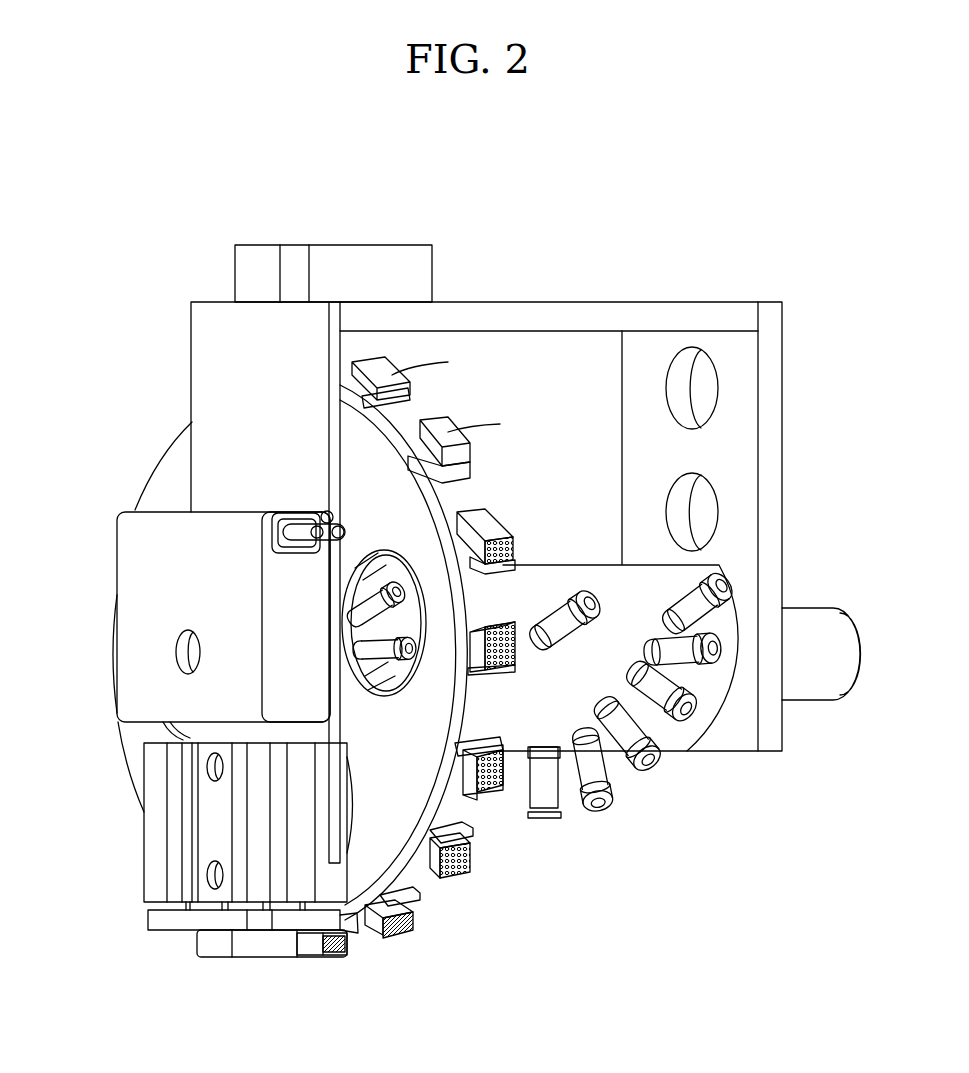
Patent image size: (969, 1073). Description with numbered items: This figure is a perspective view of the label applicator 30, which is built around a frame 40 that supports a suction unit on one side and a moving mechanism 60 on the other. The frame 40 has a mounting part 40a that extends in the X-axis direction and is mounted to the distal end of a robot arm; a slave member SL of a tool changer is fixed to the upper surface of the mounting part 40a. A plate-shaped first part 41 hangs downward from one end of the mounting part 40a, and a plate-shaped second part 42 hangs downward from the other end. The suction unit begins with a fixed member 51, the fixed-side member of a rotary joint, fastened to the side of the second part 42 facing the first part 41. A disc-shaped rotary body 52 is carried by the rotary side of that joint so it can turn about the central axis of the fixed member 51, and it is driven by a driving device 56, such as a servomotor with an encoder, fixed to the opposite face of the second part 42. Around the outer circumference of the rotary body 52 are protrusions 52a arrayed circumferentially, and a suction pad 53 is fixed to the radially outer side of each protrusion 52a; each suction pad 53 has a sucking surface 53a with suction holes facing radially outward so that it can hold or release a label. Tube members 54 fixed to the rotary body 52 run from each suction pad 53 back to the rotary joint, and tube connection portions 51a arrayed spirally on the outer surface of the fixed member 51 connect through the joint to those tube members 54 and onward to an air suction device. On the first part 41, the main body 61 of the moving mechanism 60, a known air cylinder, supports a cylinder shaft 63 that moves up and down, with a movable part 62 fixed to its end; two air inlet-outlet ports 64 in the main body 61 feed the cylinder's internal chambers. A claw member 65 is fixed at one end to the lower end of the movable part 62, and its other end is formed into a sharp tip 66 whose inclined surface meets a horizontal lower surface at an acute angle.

The label applicator 30 is at (183, 235).
The slave member SL is at (437, 263).
The frame 40 is at (706, 300).
The mounting part 40a is at (588, 318).
The first part 41 is at (205, 352).
The second part 42 is at (770, 372).
The fixed member 51 is at (598, 580).
The tube connection portions 51a is at (650, 770).
The rotary body 52 is at (172, 483).
The protrusions 52a is at (472, 484).
The suction pad 53 is at (402, 394).
The sucking surface 53a is at (462, 862).
The tube members 54 is at (372, 604).
The driving device 56 is at (808, 605).
The moving mechanism 60 is at (142, 887).
The main body 61 is at (160, 830).
The movable part 62 is at (150, 920).
The cylinder shaft 63 is at (198, 905).
The air inlet-outlet ports 64 is at (205, 768).
The claw member 65 is at (275, 957).
The sharp tip 66 is at (307, 957).